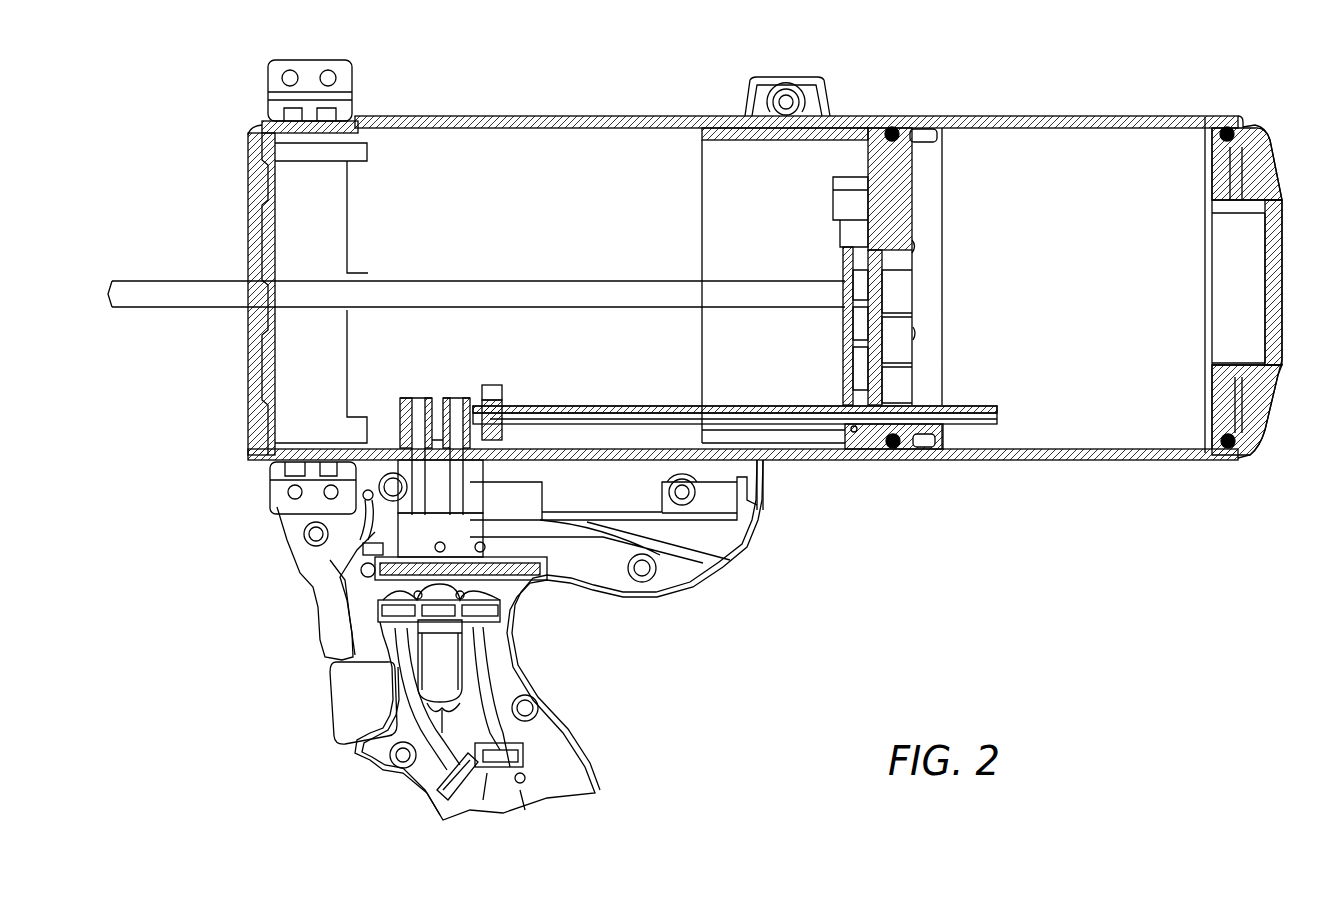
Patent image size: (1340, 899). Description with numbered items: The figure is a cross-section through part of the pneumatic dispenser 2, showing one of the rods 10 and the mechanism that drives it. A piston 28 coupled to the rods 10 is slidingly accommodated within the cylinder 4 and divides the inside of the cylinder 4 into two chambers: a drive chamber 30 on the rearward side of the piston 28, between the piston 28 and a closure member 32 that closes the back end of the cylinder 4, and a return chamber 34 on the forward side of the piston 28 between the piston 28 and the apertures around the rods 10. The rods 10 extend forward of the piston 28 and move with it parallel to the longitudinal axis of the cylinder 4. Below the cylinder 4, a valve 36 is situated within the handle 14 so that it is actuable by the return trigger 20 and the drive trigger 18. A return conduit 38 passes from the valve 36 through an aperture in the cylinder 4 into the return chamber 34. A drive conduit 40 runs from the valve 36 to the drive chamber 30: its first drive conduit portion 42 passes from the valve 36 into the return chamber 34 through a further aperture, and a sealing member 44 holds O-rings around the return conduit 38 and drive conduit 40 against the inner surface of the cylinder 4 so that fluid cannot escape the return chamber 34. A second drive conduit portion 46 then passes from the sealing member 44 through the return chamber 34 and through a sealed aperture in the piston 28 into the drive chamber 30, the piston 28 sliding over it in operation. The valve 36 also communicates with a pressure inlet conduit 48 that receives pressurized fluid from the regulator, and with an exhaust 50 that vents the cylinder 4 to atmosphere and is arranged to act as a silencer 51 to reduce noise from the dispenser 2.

The pneumatic dispenser 2 is at (782, 624).
The cylinder 4 is at (1103, 460).
The rods 10 is at (182, 281).
The handle 14 is at (582, 737).
The drive trigger 18 is at (340, 702).
The return trigger 20 is at (316, 608).
The piston 28 is at (874, 450).
The drive chamber 30 is at (1094, 145).
The closure member 32 is at (1283, 320).
The return chamber 34 is at (560, 152).
The valve 36 is at (517, 600).
The return conduit 38 is at (418, 447).
The drive conduit 40 is at (486, 497).
The first drive conduit portion 42 is at (472, 503).
The sealing member 44 is at (402, 412).
The second drive conduit portion 46 is at (787, 417).
The pressure inlet conduit 48 is at (493, 803).
The exhaust 50 is at (452, 683).
The silencer 51 is at (467, 690).